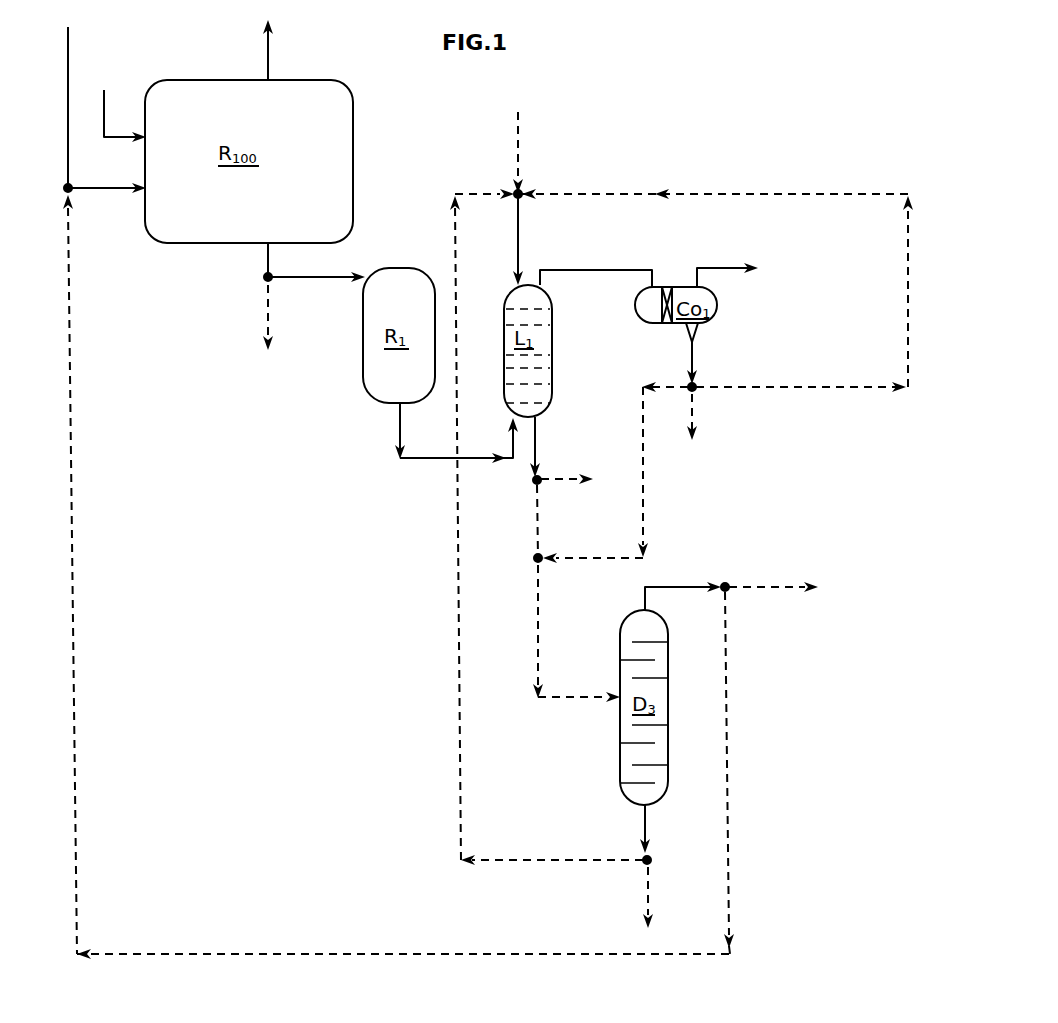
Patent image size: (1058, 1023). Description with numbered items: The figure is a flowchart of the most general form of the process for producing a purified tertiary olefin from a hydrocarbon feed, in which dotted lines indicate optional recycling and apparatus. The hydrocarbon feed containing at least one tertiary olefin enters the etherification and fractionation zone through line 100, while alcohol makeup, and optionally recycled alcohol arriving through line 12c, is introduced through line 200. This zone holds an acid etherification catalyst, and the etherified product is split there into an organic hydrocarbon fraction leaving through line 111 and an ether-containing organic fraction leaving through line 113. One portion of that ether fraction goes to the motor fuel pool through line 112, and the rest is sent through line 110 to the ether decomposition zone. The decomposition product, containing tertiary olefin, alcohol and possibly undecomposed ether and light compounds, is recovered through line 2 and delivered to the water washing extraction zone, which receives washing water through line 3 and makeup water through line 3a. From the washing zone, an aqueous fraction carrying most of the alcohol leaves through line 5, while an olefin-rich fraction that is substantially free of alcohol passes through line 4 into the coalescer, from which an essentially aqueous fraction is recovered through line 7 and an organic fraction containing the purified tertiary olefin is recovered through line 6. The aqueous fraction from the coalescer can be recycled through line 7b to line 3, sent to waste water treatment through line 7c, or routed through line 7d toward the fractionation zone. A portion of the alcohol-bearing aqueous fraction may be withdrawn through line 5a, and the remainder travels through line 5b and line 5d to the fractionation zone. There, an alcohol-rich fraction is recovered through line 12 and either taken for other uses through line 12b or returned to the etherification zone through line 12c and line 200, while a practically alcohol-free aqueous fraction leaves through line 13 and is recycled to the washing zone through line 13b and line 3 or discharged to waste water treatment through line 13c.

The line 100 is at (105, 111).
The line 111 is at (266, 60).
The line 200 is at (96, 190).
The line 113 is at (266, 266).
The line 112 is at (266, 310).
The line 110 is at (330, 282).
The line 2 is at (438, 462).
The line 3 is at (520, 229).
The line 3a is at (518, 127).
The line 4 is at (568, 268).
The line 6 is at (698, 268).
The line 7 is at (693, 357).
The line 7b is at (808, 387).
The line 7c is at (697, 412).
The line 7d is at (643, 440).
The line 5 is at (538, 440).
The line 5a is at (552, 482).
The line 5b is at (538, 529).
The line 5d is at (538, 604).
The line 12 is at (718, 587).
The line 12b is at (768, 590).
The line 12c is at (728, 673).
The line 13 is at (652, 815).
The line 13b is at (592, 860).
The line 13c is at (652, 893).